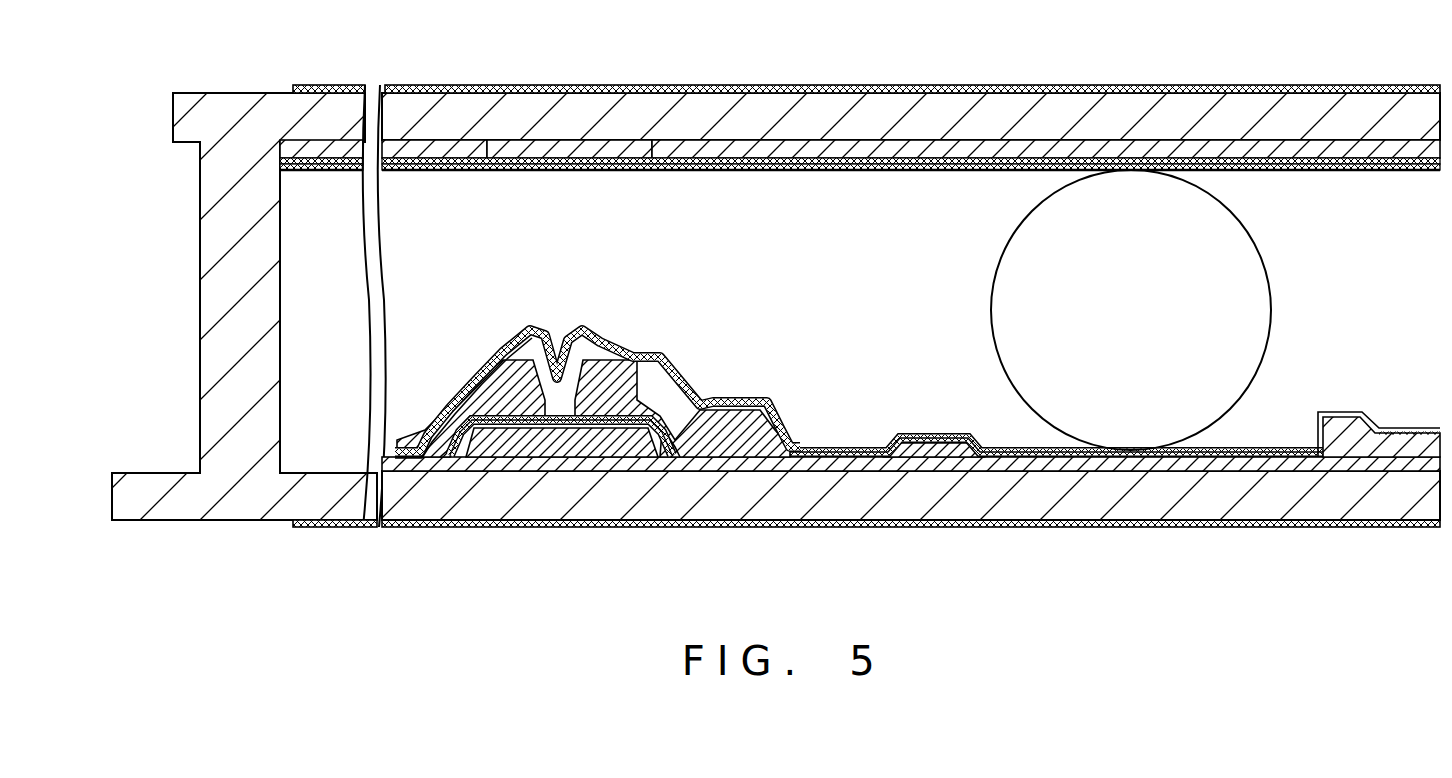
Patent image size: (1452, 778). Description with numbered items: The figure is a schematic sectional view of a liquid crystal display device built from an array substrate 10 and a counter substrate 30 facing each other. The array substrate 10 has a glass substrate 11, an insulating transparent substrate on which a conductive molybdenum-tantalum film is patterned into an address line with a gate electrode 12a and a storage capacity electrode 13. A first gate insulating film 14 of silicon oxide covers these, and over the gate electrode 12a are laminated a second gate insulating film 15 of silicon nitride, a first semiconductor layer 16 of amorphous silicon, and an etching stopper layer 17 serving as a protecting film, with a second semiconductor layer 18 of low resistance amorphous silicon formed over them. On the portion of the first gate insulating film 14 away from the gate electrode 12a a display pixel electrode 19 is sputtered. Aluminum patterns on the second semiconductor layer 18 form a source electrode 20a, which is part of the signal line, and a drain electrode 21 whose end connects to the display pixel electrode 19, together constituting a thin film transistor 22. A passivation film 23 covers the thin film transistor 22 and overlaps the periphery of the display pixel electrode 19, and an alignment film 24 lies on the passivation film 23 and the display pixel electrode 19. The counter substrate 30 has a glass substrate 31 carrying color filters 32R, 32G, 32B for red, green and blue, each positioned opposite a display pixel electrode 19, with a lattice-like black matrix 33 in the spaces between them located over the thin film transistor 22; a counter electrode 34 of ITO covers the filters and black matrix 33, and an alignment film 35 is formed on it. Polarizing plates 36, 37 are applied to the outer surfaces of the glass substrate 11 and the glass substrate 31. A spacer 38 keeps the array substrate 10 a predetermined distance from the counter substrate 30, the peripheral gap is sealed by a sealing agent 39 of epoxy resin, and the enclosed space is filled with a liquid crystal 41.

The array substrate 10 is at (1178, 571).
The glass substrate 11 is at (1000, 500).
The gate electrode 12a is at (585, 450).
The storage capacity electrode 13 is at (932, 448).
The first gate insulating film 14 is at (1272, 464).
The second gate insulating film 15 is at (495, 437).
The first semiconductor layer 16 is at (470, 427).
The etching stopper layer 17 is at (545, 425).
The second semiconductor layer 18 is at (440, 404).
The display pixel electrode 19 is at (1225, 455).
The source electrode 20a is at (420, 460).
The drain electrode 21 is at (722, 450).
The thin film transistor 22 is at (573, 340).
The passivation film 23 is at (1400, 440).
The alignment film 24 is at (866, 447).
The counter substrate 30 is at (993, 112).
The glass substrate 31 is at (1125, 112).
The red color filter 32R is at (325, 148).
The green color filter 32G is at (460, 150).
The blue color filter 32B is at (795, 148).
The black matrix 33 is at (610, 150).
The counter electrode 34 is at (895, 160).
The alignment film 35 is at (1030, 166).
The polarizing plate 36 is at (1125, 464).
The polarizing plate 37 is at (1178, 90).
The spacer 38 is at (1258, 320).
The sealing agent 39 is at (208, 272).
The liquid crystal 41 is at (1355, 200).